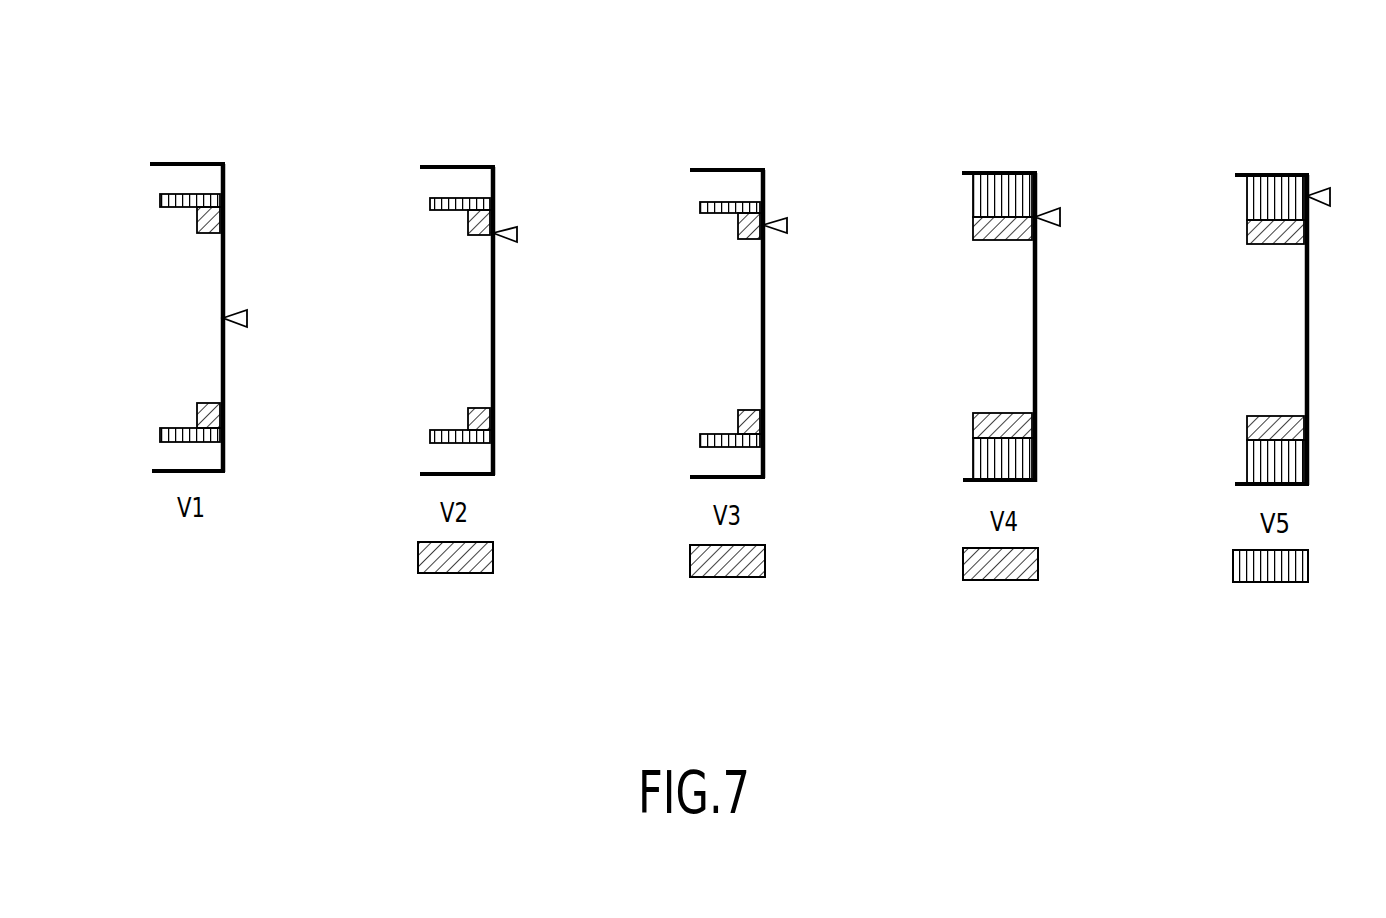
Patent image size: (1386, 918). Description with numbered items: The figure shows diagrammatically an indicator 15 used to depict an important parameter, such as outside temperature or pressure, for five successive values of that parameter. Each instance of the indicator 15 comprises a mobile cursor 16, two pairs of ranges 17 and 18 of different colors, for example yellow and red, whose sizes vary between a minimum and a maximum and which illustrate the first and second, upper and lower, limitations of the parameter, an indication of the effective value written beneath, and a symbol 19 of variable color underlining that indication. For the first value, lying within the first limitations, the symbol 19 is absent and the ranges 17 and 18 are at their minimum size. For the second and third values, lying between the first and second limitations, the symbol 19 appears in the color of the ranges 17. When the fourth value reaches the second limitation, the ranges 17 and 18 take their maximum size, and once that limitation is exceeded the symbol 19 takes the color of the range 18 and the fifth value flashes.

The indicator 15 is at (426, 152).
The mobile cursor 16 is at (235, 310).
The range 17 is at (197, 232).
The range 18 is at (160, 200).
The symbol 19 is at (449, 561).